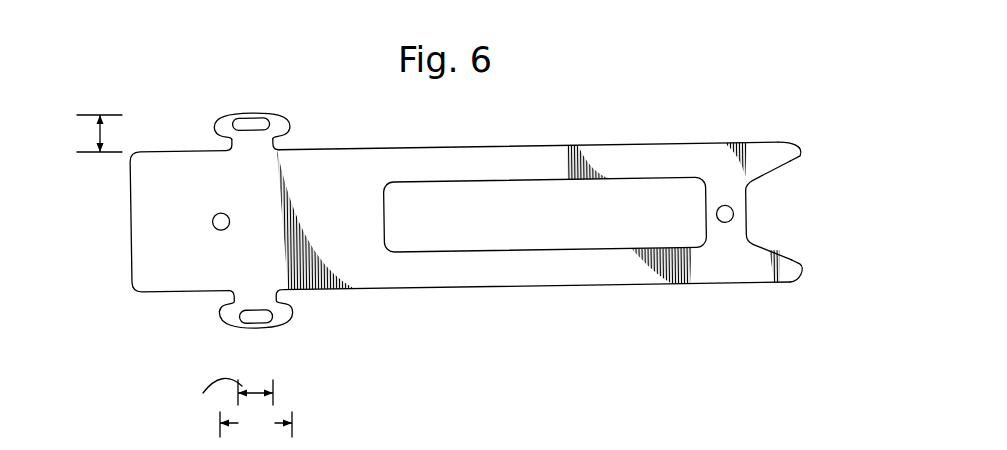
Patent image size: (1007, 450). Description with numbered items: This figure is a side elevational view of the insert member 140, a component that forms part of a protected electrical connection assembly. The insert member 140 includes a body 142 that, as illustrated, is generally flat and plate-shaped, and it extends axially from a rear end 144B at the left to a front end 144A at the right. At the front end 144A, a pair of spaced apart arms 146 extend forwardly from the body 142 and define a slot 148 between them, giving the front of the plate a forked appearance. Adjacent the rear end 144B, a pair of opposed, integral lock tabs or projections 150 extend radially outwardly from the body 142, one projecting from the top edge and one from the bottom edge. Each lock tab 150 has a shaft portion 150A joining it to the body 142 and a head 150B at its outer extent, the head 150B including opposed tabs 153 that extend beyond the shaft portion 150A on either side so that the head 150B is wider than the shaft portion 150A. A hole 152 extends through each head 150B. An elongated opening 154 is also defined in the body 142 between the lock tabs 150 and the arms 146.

The insert member 140 is at (551, 128).
The body 142 is at (648, 160).
The front end 144A is at (800, 153).
The rear end 144B is at (130, 231).
The arms 146 is at (787, 150).
The slot 148 is at (781, 205).
The lock tab 150 is at (278, 112).
The shaft portion 150A is at (272, 298).
The head 150B is at (228, 326).
The hole 152 is at (258, 118).
The tabs 153 is at (284, 125).
The opening 154 is at (548, 245).